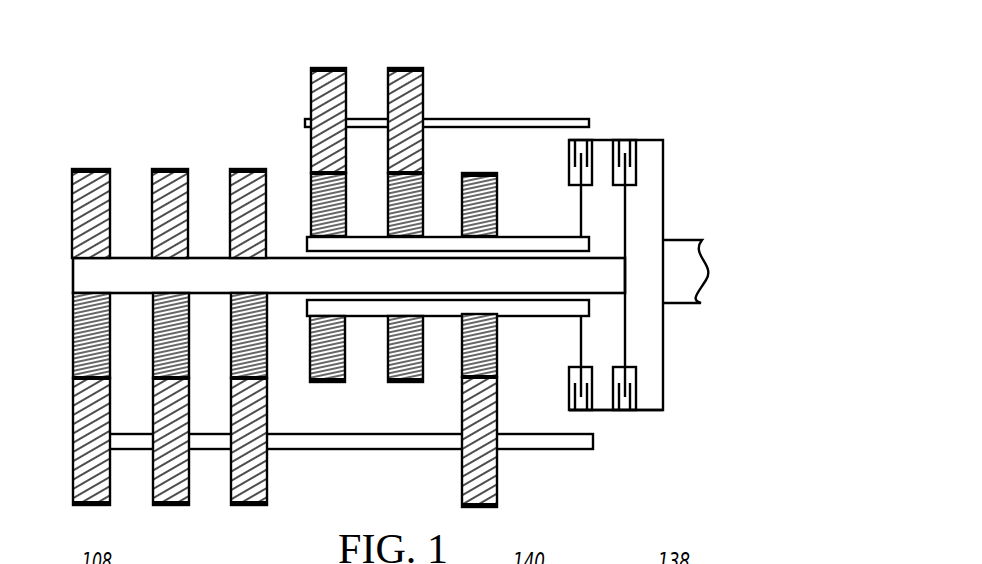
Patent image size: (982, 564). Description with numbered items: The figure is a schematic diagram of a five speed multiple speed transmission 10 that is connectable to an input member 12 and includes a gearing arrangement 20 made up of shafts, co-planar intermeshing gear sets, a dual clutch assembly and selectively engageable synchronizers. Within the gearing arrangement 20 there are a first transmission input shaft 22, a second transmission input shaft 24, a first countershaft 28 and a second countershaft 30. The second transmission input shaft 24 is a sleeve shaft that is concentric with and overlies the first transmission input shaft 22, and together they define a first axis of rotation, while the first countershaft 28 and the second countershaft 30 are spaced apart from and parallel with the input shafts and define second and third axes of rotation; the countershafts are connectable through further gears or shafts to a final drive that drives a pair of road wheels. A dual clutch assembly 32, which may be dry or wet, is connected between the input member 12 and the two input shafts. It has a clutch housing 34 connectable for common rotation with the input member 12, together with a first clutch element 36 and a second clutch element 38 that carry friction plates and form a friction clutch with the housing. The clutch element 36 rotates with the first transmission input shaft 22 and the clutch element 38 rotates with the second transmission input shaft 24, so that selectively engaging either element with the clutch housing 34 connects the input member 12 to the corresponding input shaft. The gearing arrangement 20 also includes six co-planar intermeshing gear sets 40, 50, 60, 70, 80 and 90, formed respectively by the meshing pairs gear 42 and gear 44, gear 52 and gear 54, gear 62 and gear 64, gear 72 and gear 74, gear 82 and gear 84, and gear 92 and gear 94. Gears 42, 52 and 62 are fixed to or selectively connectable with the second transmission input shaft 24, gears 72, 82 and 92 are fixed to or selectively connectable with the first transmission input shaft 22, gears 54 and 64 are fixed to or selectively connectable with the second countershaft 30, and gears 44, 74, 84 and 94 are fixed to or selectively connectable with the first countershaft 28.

The multiple speed transmission 10 is at (536, 94).
The input member 12 is at (680, 307).
The gearing arrangement 20 is at (252, 88).
The first transmission input shaft 22 is at (597, 256).
The second transmission input shaft 24 is at (513, 318).
The first countershaft 28 is at (345, 452).
The second countershaft 30 is at (518, 130).
The dual clutch assembly 32 is at (616, 270).
The clutch housing 34 is at (647, 412).
The first clutch element 36 is at (625, 345).
The second clutch element 38 is at (580, 340).
The first co-planar gear set 40 is at (462, 277).
The gear 42 is at (462, 183).
The gear 44 is at (462, 462).
The second co-planar gear set 50 is at (402, 210).
The gear 52 is at (423, 329).
The gear 54 is at (388, 139).
The third co-planar gear set 60 is at (324, 215).
The gear 62 is at (347, 350).
The gear 64 is at (311, 150).
The fourth co-planar gear set 70 is at (248, 305).
The gear 72 is at (230, 195).
The gear 74 is at (267, 470).
The fifth co-planar gear set 80 is at (156, 303).
The gear 82 is at (152, 195).
The gear 84 is at (153, 465).
The sixth co-planar gear set 90 is at (78, 303).
The gear 92 is at (72, 195).
The gear 94 is at (73, 465).